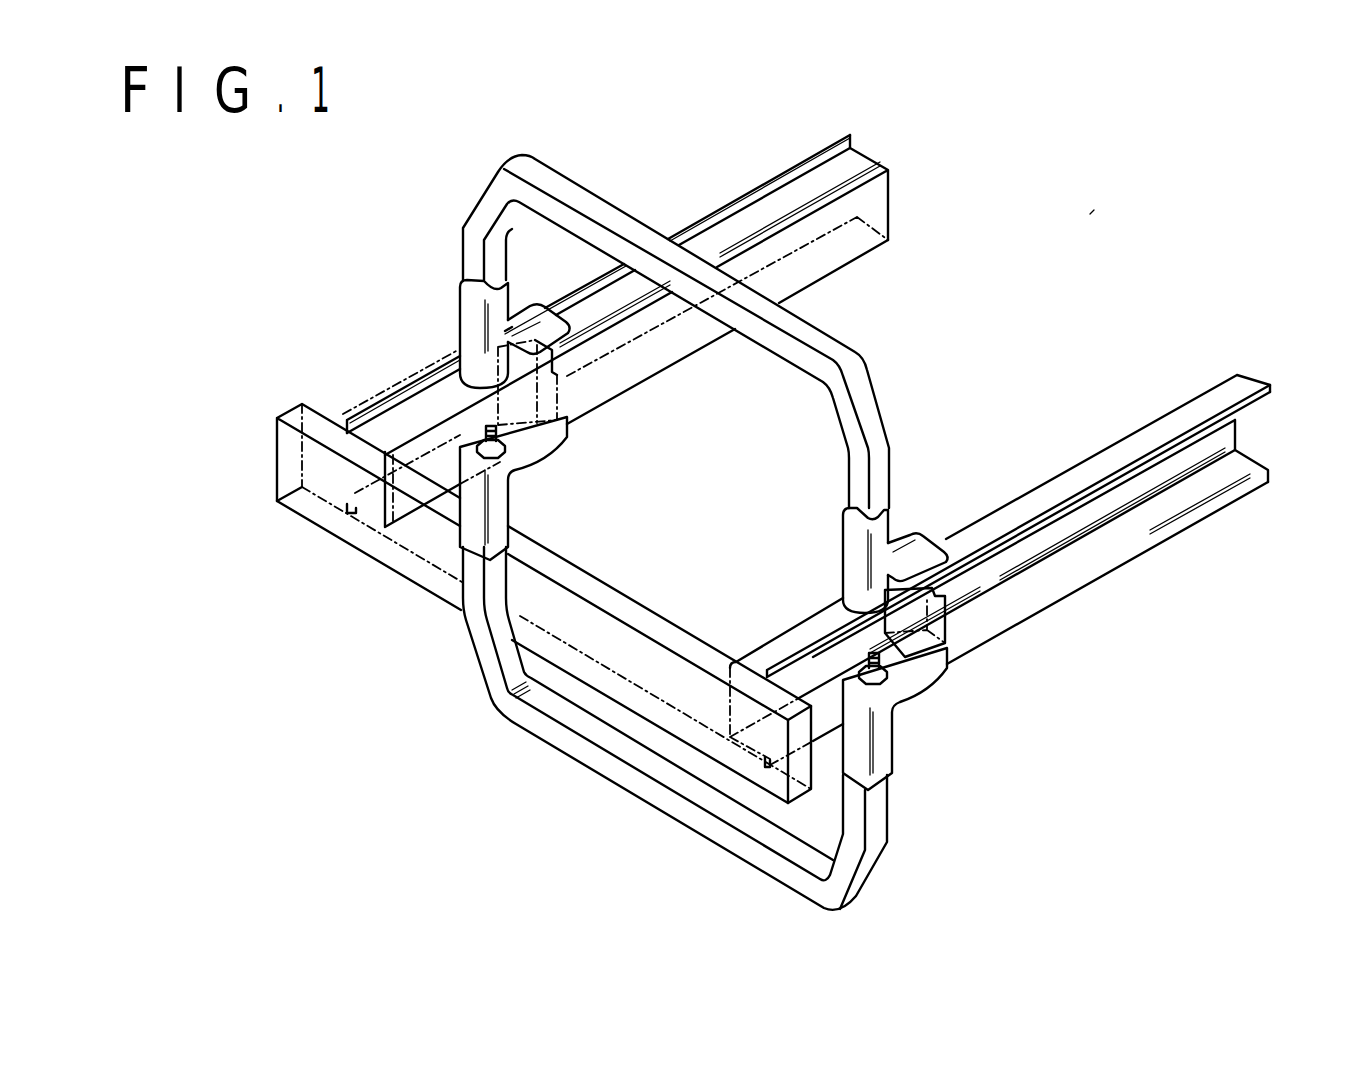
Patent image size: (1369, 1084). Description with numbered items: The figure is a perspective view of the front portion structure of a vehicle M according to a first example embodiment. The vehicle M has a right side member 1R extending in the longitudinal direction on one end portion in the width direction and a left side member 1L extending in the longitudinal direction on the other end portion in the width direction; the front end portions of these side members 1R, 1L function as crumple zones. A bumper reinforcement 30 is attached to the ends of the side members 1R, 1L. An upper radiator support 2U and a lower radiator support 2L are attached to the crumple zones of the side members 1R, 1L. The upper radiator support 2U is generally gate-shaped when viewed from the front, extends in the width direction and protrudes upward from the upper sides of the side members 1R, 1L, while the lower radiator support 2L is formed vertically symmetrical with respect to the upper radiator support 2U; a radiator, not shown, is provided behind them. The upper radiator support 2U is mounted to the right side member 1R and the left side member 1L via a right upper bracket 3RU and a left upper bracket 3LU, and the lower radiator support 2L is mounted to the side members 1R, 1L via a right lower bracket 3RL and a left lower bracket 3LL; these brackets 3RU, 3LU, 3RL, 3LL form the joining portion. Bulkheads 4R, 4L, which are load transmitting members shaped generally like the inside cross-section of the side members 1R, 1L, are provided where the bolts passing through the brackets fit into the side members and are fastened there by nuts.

The vehicle M is at (1092, 215).
The bumper reinforcement 30 is at (413, 565).
The right side member 1R is at (755, 222).
The left side member 1L is at (1157, 518).
The upper radiator support 2U is at (862, 402).
The lower radiator support 2L is at (682, 810).
The right upper bracket 3RU is at (473, 342).
The right lower bracket 3RL is at (503, 480).
The left upper bracket 3LU is at (855, 575).
The left lower bracket 3LL is at (880, 752).
The bulkhead 4R is at (556, 380).
The bulkhead 4L is at (940, 625).